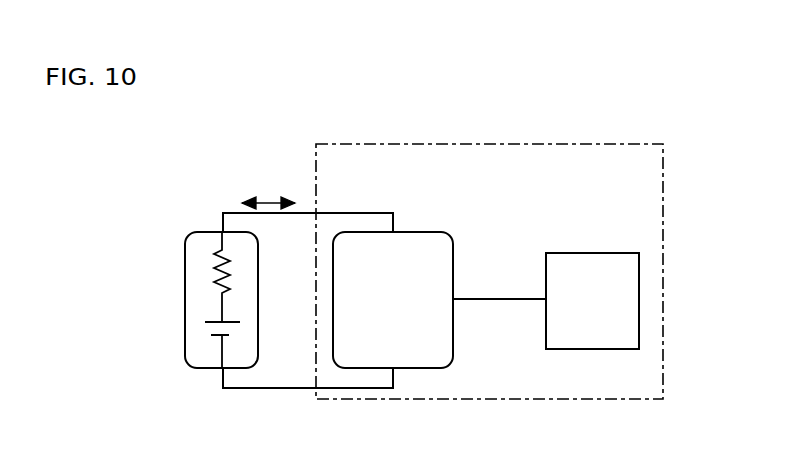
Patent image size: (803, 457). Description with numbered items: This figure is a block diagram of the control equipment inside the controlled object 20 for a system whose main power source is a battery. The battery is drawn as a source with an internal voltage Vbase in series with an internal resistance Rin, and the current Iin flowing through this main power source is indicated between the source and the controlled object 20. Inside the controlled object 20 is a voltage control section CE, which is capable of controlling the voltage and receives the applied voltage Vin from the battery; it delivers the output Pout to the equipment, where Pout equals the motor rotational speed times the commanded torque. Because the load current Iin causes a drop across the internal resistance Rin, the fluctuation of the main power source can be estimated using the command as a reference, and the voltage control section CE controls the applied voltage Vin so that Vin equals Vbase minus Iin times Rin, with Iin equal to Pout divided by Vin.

The controlled object 20 is at (489, 202).
The internal resistance of the main power source Rin is at (174, 277).
The internal voltage of the main power source Vbase is at (172, 343).
The current through the main power source Iin is at (268, 186).
The applied voltage of equipment Vin is at (342, 216).
The output voltage of the equipment Pout is at (499, 270).
The voltage control section CE is at (453, 340).